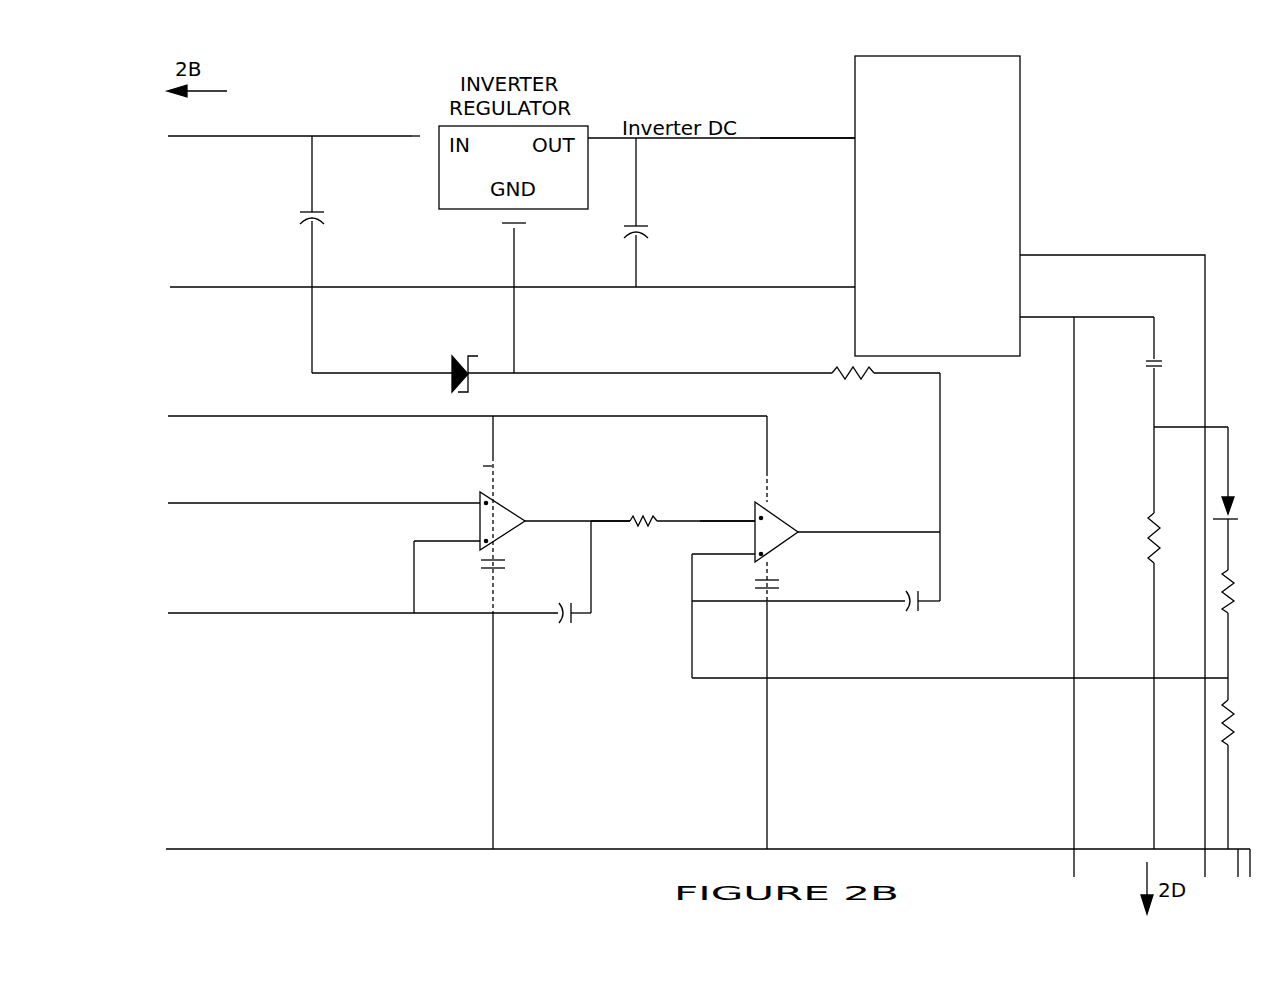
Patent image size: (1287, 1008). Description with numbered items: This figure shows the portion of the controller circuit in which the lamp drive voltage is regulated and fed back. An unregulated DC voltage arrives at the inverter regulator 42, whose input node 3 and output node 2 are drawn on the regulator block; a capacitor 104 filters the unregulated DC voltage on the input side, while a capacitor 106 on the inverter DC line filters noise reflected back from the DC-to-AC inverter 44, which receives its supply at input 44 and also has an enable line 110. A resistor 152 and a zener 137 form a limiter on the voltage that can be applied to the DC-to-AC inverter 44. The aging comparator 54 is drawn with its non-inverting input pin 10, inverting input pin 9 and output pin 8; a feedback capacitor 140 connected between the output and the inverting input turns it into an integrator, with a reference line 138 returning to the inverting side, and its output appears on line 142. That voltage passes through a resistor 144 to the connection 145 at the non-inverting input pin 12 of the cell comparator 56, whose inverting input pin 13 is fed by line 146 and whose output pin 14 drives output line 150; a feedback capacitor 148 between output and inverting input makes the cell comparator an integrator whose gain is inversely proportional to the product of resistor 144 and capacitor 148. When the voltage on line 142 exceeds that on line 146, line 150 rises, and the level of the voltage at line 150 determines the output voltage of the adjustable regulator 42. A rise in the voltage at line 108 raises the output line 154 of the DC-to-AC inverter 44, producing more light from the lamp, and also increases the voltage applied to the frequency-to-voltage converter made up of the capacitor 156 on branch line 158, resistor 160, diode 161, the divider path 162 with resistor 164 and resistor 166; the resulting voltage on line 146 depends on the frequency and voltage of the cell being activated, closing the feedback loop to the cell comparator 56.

The inverter DC node 2 is at (721, 127).
The regulator input node 3 is at (424, 131).
The aging comparator output pin 8 is at (577, 507).
The aging comparator inverting input pin 9 is at (447, 531).
The aging comparator non-inverting input pin 10 is at (324, 493).
The cell comparator non-inverting input pin 12 is at (727, 507).
The cell comparator inverting input pin 13 is at (723, 542).
The cell comparator output pin 14 is at (869, 519).
The inverter regulator 42 is at (290, 116).
The DC-to-AC inverter 44 is at (807, 124).
The aging comparator 54 is at (515, 520).
The cell comparator 56 is at (767, 475).
The capacitor 104 is at (296, 254).
The capacitor 106 is at (656, 212).
The line 108 is at (782, 139).
The enable line 110 is at (1120, 255).
The zener 137 is at (452, 362).
The reference line 138 is at (400, 615).
The feedback capacitor 140 is at (563, 602).
The output line 142 is at (610, 520).
The resistor 144 is at (647, 533).
The cell comparator input connection 145 is at (700, 520).
The line 146 is at (690, 612).
The feedback capacitor 148 is at (908, 605).
The output line 150 is at (940, 472).
The resistor 152 is at (704, 389).
The output line 154 is at (1073, 358).
The capacitor 156 is at (1157, 368).
The AC output branch line 158 is at (1225, 427).
The resistor 160 is at (1174, 638).
The diode 161 is at (1244, 498).
The resistor 162 is at (1230, 530).
The resistor 164 is at (1251, 656).
The resistor 166 is at (1248, 774).